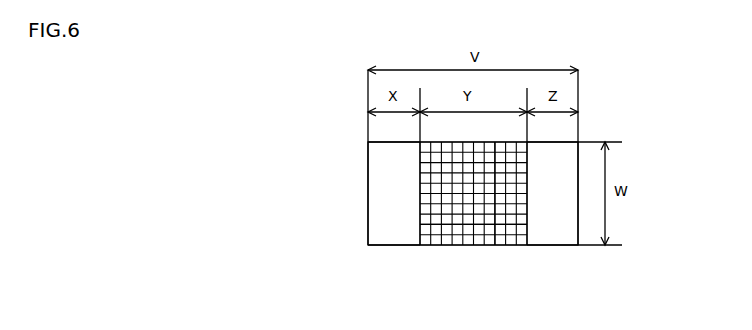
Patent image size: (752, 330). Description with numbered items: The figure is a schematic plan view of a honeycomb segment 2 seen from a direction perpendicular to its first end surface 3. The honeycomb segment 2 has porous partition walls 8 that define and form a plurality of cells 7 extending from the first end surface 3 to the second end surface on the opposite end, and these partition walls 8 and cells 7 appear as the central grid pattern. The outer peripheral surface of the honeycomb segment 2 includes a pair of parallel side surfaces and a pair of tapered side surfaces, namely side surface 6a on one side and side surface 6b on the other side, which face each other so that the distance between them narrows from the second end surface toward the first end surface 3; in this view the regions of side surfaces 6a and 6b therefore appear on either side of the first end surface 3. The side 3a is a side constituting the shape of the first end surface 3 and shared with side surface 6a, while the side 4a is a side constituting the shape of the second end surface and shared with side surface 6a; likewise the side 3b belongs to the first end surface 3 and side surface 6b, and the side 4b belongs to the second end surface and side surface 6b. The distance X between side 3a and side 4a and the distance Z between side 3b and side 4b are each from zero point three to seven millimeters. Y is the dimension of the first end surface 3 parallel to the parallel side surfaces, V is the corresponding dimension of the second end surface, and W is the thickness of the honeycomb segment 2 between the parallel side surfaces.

The honeycomb segment 2 is at (362, 176).
The first end surface 3 is at (470, 213).
The side 3a is at (420, 200).
The side 3b is at (527, 200).
The side 4a is at (367, 230).
The side 4b is at (580, 220).
The side surface 6a is at (383, 162).
The side surface 6b is at (567, 163).
The cells 7 is at (497, 222).
The porous partition walls 8 is at (452, 220).